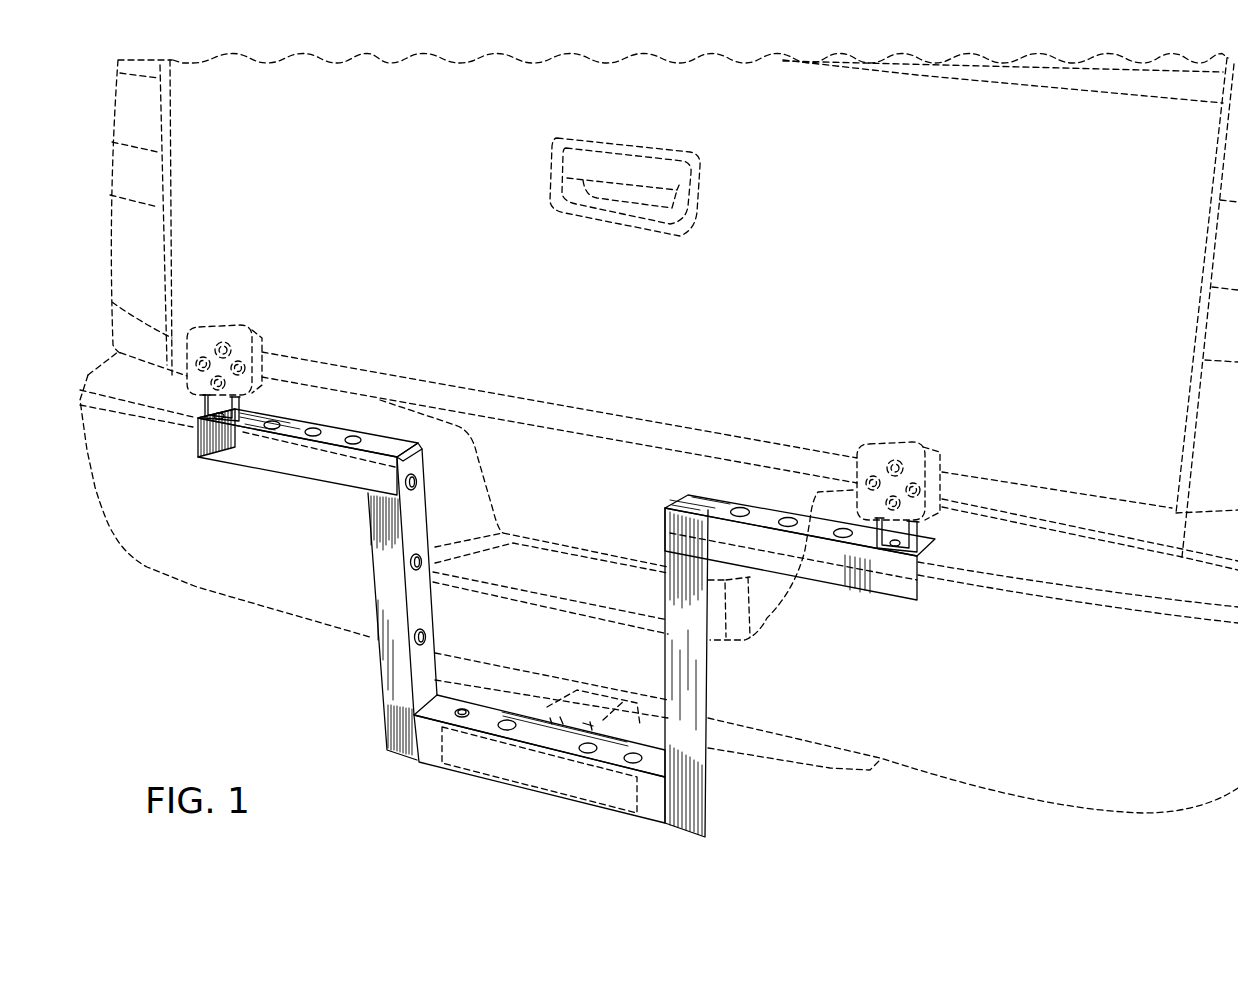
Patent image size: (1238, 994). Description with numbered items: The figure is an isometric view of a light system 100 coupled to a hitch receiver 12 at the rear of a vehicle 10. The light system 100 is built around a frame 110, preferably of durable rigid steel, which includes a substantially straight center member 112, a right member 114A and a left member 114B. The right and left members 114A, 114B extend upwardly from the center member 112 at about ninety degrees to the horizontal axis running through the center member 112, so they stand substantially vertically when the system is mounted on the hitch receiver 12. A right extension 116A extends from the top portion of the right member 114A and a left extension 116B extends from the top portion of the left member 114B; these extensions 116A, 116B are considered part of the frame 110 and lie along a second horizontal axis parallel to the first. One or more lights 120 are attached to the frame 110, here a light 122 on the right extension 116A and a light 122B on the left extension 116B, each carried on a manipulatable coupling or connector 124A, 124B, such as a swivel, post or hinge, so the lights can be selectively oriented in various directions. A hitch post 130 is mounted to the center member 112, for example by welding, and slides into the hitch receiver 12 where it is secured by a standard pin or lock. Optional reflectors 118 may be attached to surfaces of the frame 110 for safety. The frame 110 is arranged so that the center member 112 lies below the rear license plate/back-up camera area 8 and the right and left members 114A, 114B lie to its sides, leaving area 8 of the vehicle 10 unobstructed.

The rear license plate/back-up camera area 8 is at (541, 481).
The vehicle 10 is at (887, 202).
The hitch receiver 12 is at (587, 697).
The light system 100 is at (184, 614).
The frame 110 is at (777, 708).
The center member 112 is at (652, 817).
The right member 114A is at (690, 665).
The left member 114B is at (387, 670).
The right extension 116A is at (820, 580).
The left extension 116B is at (323, 477).
The reflectors 118 is at (260, 447).
The lights 120 is at (285, 332).
The light 122 is at (927, 465).
The light 122B is at (238, 340).
The manipulatable coupling or connector 124A is at (917, 531).
The manipulatable coupling or connector 124B is at (202, 417).
The hitch post 130 is at (548, 712).